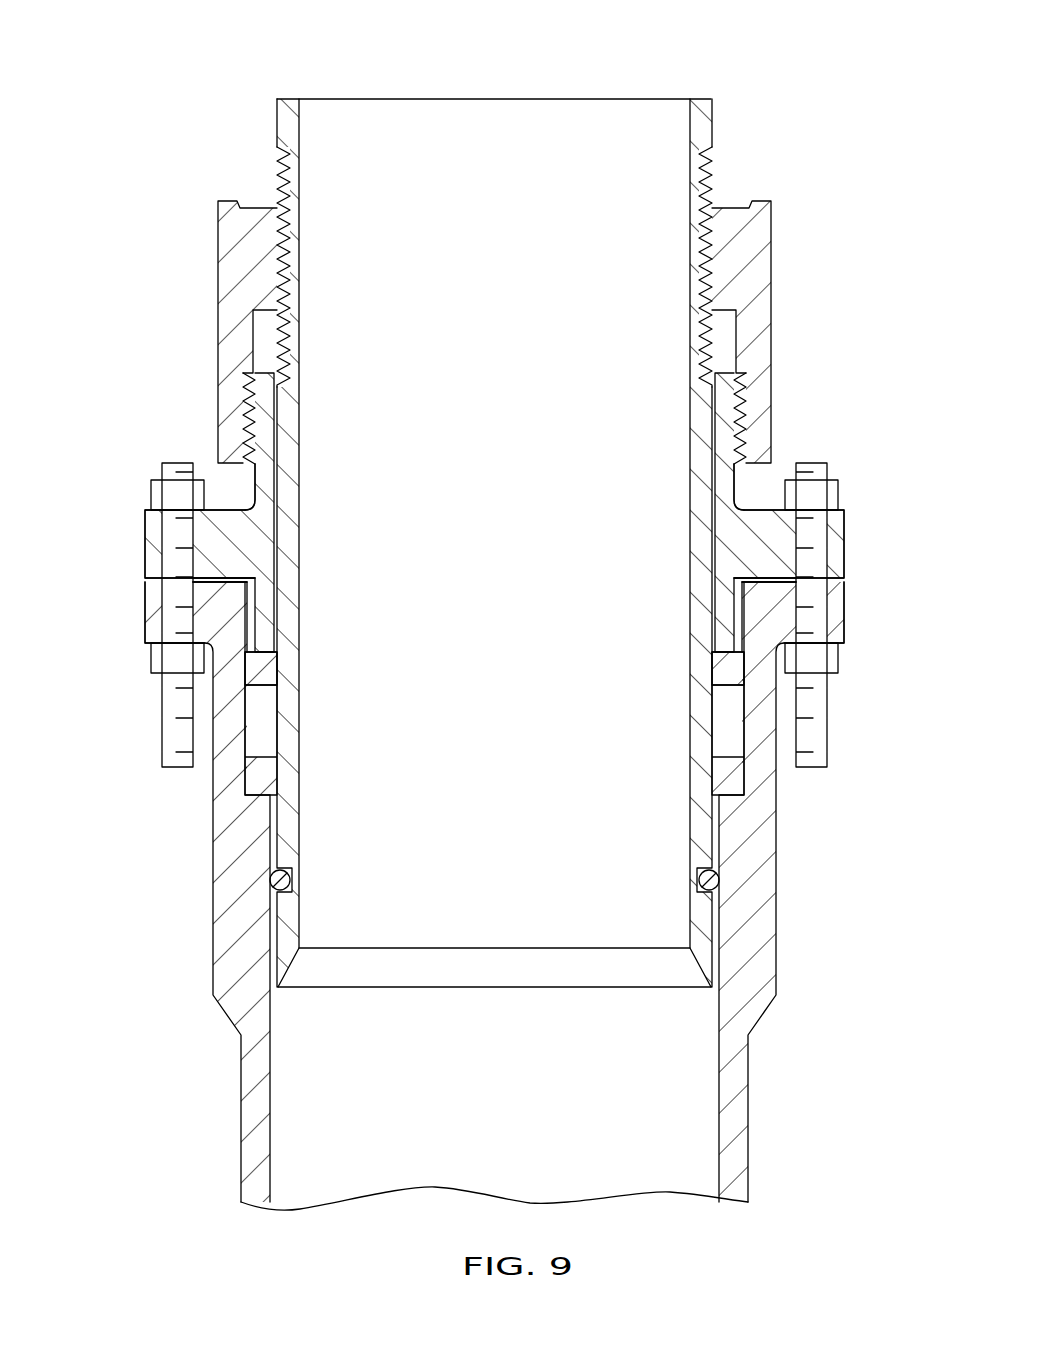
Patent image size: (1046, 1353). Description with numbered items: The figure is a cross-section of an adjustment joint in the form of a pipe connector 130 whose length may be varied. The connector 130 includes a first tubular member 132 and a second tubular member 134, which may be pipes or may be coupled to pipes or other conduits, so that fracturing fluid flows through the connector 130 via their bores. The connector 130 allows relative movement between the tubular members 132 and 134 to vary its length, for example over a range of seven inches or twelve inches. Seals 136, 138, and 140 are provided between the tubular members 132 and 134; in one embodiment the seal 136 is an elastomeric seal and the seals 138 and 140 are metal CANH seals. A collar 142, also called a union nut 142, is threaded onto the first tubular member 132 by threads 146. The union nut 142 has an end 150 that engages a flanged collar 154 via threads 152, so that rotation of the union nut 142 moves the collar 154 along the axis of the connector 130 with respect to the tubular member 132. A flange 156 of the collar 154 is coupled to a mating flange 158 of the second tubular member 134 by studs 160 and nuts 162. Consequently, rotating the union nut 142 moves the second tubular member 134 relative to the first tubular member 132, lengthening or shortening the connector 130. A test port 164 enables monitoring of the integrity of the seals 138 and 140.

The pipe connector 130 is at (502, 50).
The first tubular member 132 is at (277, 128).
The second tubular member 134 is at (234, 1010).
The seal 136 is at (272, 883).
The seal 138 is at (245, 780).
The seal 140 is at (193, 717).
The collar 142 is at (228, 236).
The threads 146 is at (299, 236).
The end 150 is at (228, 400).
The threads 152 is at (243, 442).
The flanged collar 154 is at (258, 490).
The flange 156 is at (147, 567).
The mating flange 158 is at (147, 622).
The studs 160 is at (147, 602).
The nuts 162 is at (157, 493).
The test port 164 is at (245, 670).